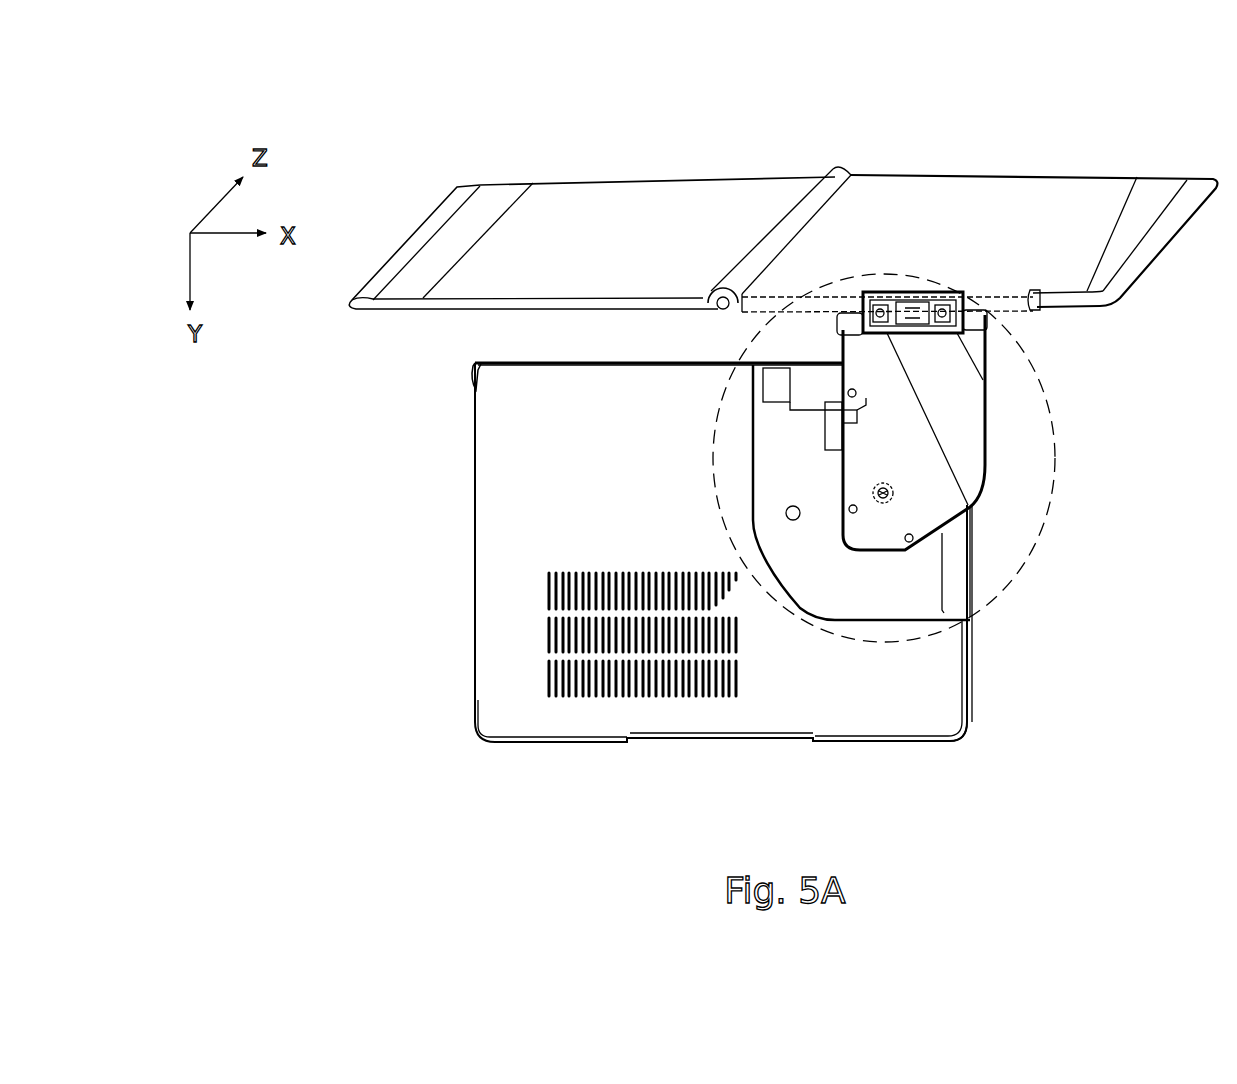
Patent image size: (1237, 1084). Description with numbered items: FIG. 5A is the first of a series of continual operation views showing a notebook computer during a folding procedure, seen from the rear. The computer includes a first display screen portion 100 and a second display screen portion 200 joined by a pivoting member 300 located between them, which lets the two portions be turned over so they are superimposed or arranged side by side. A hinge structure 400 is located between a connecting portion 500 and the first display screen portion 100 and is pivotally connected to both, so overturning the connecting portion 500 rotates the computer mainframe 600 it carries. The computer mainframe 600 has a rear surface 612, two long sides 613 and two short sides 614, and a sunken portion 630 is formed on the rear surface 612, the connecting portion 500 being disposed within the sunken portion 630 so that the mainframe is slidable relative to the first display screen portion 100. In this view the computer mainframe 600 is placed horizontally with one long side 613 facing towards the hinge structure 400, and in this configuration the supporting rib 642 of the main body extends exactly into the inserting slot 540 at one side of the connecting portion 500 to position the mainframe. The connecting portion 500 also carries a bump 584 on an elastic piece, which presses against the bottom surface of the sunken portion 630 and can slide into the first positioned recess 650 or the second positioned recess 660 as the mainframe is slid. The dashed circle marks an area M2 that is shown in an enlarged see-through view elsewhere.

The first display screen portion 100 is at (1130, 170).
The second display screen portion 200 is at (620, 177).
The pivoting member 300 is at (846, 167).
The hinge structure 400 is at (947, 288).
The connecting portion 500 is at (989, 418).
The inserting slot 540 is at (866, 398).
The bump 584 is at (883, 512).
The computer mainframe 600 is at (473, 462).
The rear surface 612 is at (497, 548).
The long side 613 is at (513, 362).
The short side 614 is at (973, 670).
The sunken portion 630 is at (965, 560).
The supporting rib 642 is at (843, 417).
The first positioned recess 650 is at (884, 502).
The second positioned recess 660 is at (790, 525).
The area M2 is at (1032, 367).